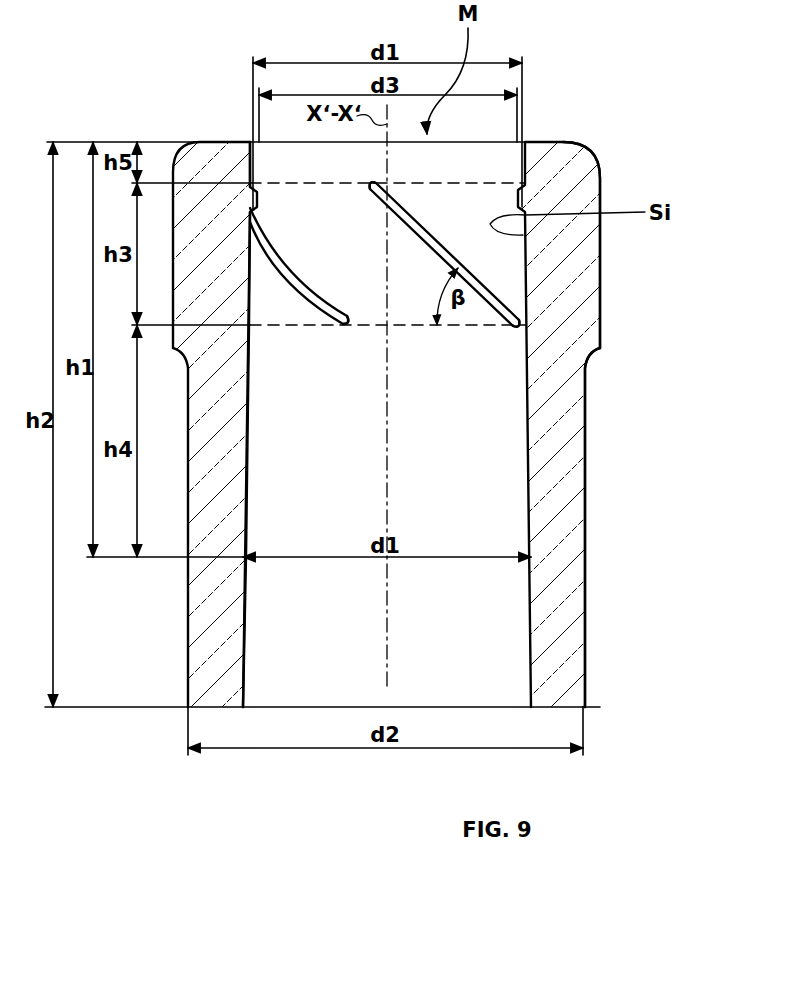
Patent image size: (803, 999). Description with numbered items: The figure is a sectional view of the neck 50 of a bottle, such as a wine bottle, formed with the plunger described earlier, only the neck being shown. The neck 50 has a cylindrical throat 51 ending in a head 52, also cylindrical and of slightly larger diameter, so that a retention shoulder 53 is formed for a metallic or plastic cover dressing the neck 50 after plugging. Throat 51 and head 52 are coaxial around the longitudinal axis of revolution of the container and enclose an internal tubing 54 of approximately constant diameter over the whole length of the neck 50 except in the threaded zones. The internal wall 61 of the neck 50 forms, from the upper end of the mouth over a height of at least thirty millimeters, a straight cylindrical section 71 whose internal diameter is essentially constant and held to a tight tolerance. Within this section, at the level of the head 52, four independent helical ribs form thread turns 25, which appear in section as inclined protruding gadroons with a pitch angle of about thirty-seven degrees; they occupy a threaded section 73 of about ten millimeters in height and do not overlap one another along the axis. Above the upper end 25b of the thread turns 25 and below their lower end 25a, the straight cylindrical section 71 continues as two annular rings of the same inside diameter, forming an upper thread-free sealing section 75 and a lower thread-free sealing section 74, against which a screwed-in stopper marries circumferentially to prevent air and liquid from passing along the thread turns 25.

The thread turns 25 is at (400, 225).
The lower end of the thread turns 25a is at (346, 327).
The upper end of the thread turns 25b is at (373, 182).
The neck 50 is at (607, 420).
The cylindrical throat 51 is at (587, 522).
The head 52 is at (601, 240).
The retention shoulder 53 is at (597, 362).
The internal tubing 54 is at (387, 424).
The internal wall 61 is at (252, 529).
The straight cylindrical section 71 is at (246, 417).
The threaded section 73 is at (248, 300).
The lower thread-free sealing section 74 is at (247, 373).
The upper thread-free sealing section 75 is at (252, 165).